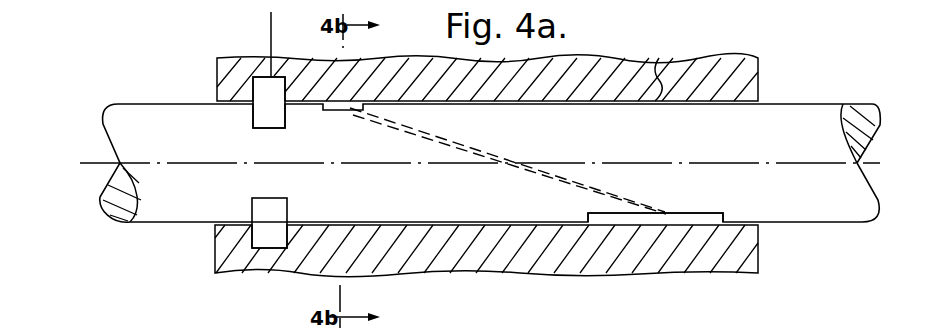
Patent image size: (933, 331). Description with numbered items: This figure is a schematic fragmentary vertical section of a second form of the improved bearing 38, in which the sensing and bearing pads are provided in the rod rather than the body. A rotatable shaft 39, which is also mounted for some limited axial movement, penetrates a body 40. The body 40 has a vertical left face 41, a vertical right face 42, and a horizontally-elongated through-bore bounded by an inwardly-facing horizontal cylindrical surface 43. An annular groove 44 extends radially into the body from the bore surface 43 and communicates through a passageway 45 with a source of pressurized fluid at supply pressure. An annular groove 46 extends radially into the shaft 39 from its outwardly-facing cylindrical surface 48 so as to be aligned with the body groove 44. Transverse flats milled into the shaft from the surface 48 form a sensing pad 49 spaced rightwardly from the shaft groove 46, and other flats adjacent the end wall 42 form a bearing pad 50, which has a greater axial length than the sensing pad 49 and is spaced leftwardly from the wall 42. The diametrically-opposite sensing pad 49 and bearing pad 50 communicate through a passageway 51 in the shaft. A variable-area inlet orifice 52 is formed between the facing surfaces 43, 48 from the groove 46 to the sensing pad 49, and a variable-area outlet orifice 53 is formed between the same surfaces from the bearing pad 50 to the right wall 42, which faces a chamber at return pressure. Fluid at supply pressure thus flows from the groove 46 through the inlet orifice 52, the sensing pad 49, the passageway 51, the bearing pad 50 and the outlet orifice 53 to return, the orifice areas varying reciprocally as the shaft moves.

The improved bearing 38 is at (793, 77).
The rotatable shaft 39 is at (827, 102).
The body 40 is at (696, 55).
The vertical left face 41 is at (217, 71).
The vertical right face 42 is at (758, 248).
The inwardly-facing horizontal cylindrical surface 43 is at (535, 104).
The annular groove 44 is at (272, 238).
The passageway 45 is at (258, 46).
The annular groove 46 is at (267, 207).
The outwardly-facing cylindrical surface 48 is at (660, 57).
The sensing pad 49 is at (368, 100).
The bearing pad 50 is at (617, 218).
The passageway 51 is at (567, 187).
The variable-area inlet orifice 52 is at (302, 116).
The variable-area outlet orifice 53 is at (736, 242).